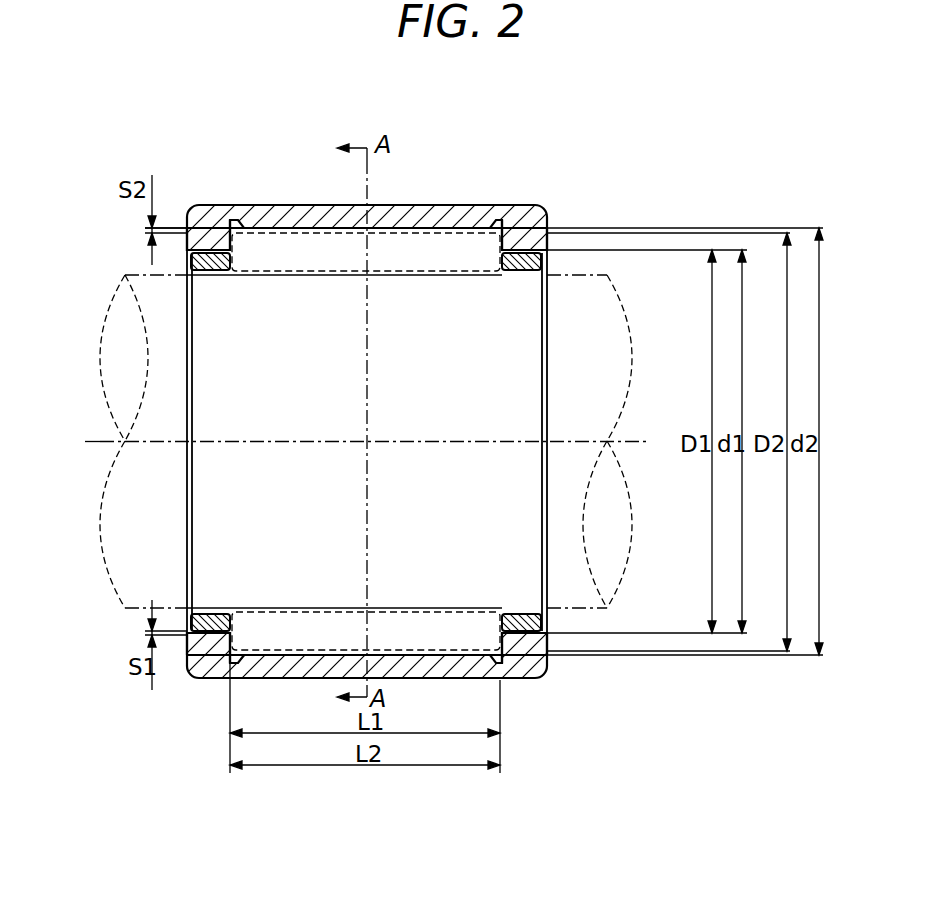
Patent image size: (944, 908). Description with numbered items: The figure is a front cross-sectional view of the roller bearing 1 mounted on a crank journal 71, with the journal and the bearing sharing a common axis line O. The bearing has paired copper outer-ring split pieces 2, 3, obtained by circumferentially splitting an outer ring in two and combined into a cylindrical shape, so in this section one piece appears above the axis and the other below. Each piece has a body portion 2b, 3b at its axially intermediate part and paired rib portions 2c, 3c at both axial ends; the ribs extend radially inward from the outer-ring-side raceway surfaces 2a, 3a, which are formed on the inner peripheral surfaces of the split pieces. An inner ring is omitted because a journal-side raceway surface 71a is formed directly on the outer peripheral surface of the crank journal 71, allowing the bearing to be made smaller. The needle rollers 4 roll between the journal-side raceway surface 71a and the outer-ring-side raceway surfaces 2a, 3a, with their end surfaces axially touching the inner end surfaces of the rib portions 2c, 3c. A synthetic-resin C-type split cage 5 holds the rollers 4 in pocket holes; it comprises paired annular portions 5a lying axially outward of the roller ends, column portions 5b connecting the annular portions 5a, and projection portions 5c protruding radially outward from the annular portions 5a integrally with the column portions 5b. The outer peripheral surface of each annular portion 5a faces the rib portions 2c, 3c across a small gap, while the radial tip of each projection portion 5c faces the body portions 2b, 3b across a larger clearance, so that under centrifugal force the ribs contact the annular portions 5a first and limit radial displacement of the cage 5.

The roller bearing 1 is at (668, 172).
The outer-ring split piece 2 is at (515, 197).
The outer-ring-side raceway surface 2a is at (272, 240).
The body portion 2b is at (280, 228).
The rib portion 2c is at (187, 217).
The outer-ring split piece 3 is at (517, 695).
The outer-ring-side raceway surface 3a is at (296, 657).
The body portion 3b is at (326, 668).
The rib portion 3c is at (192, 656).
The needle roller 4 is at (328, 246).
The cage 5 is at (552, 262).
The annular portion 5a is at (520, 271).
The column portion 5b is at (398, 276).
The projection portion 5c is at (467, 215).
The crank journal 71 is at (130, 272).
The journal-side raceway surface 71a is at (215, 278).
The axis line O is at (100, 441).